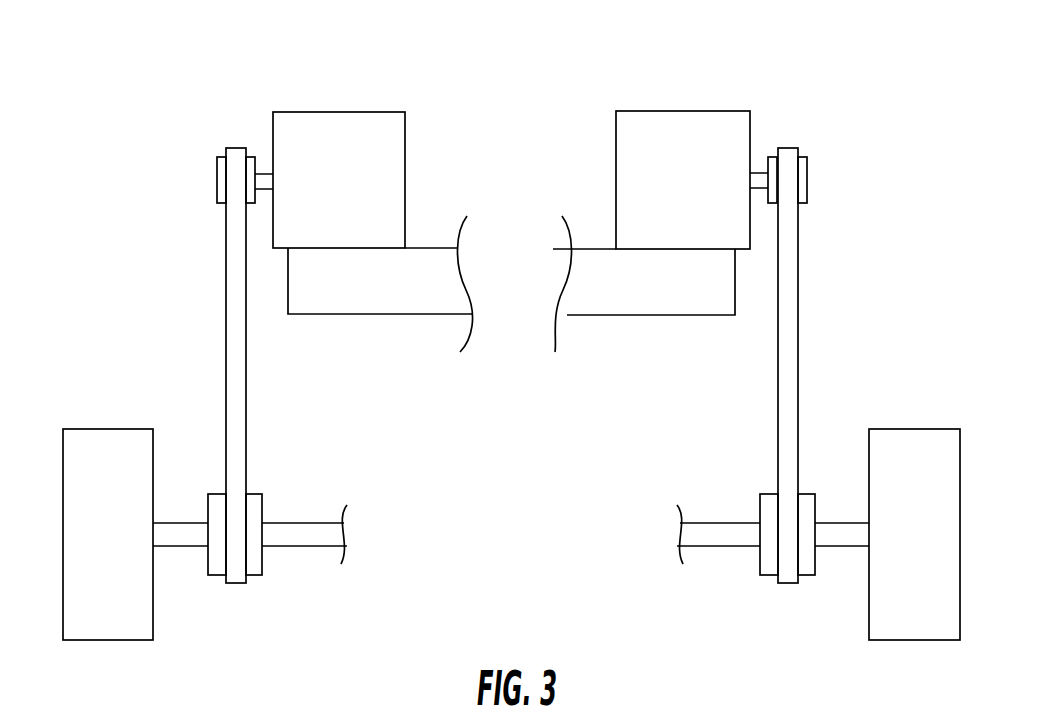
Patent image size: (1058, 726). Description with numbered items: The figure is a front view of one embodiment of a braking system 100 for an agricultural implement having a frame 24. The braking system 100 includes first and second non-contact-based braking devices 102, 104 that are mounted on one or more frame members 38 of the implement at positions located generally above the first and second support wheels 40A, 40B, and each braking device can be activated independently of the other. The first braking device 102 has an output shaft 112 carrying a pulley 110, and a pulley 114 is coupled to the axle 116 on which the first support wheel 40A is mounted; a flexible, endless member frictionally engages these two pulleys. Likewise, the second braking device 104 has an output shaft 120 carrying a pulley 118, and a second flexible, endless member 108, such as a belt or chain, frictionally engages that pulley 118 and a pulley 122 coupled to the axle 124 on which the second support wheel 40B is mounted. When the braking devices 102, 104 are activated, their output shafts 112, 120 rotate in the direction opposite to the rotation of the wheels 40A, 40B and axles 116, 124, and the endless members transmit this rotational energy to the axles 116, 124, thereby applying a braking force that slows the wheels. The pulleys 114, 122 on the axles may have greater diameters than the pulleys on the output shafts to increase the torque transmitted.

The braking system 100 is at (108, 98).
The frame 24 is at (498, 162).
The first non-contact-based braking device 102 is at (310, 112).
The second non-contact-based braking device 104 is at (712, 111).
The frame member 38 is at (340, 314).
The second flexible, endless member 108 is at (226, 338).
The pulley 110 is at (217, 177).
The output shaft 112 is at (263, 172).
The pulley 118 is at (807, 177).
The output shaft 120 is at (758, 172).
The first support wheel 40A is at (110, 429).
The second support wheel 40B is at (912, 429).
The pulley 114 is at (263, 508).
The axle 116 is at (291, 547).
The pulley 122 is at (760, 508).
The axle 124 is at (732, 547).